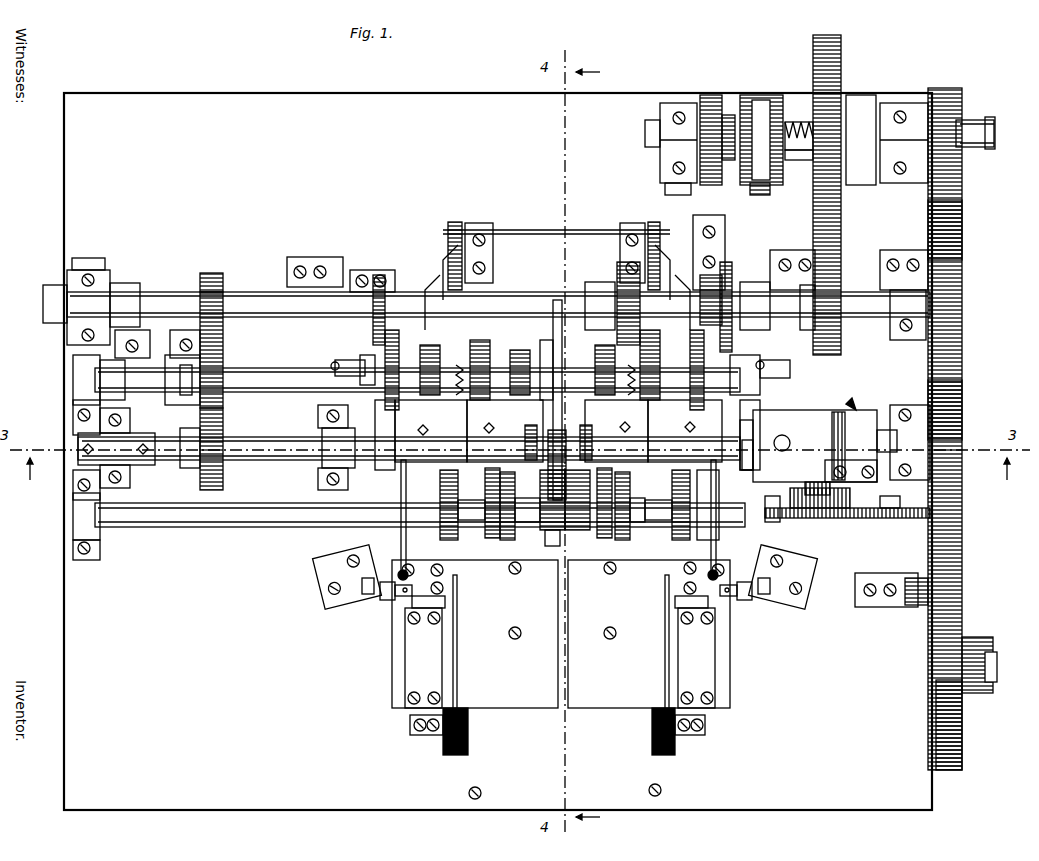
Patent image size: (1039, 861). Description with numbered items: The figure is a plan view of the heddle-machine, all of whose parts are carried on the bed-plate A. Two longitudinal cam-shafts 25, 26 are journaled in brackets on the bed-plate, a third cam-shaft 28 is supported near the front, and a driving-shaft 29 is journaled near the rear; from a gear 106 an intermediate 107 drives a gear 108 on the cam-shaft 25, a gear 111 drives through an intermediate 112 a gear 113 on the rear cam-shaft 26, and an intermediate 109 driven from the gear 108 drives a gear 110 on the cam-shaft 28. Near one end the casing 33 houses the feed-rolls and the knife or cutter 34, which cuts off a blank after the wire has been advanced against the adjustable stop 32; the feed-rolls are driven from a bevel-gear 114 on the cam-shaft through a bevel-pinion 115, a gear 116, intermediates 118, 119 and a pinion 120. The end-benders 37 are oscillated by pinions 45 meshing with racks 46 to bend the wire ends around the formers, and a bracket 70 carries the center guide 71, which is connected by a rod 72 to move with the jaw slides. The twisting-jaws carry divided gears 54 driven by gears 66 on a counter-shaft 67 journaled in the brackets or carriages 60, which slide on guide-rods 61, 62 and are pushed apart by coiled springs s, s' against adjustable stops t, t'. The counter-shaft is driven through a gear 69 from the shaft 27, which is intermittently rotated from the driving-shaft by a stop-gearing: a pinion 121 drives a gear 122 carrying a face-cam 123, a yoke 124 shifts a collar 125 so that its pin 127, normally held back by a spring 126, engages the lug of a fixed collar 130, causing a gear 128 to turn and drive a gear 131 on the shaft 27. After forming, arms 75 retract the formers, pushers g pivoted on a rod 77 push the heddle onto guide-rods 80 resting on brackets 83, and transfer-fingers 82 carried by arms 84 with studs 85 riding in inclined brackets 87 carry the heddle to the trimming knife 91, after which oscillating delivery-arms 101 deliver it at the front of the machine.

The bed-plate A is at (498, 451).
The cam-shaft 25 is at (256, 440).
The rear cam-shaft 26 is at (265, 322).
The shaft 27 is at (158, 300).
The third cam-shaft 28 is at (998, 692).
The driving-shaft 29 is at (972, 130).
The adjustable stop 32 is at (330, 450).
The frame or casing 33 is at (808, 446).
The knife or cutter 34 is at (745, 462).
The end-benders 37 is at (405, 432).
The pinions 45 is at (388, 355).
The racks 46 is at (333, 364).
The divided gear or pinion 54 is at (497, 462).
The brackets or carriages 60 is at (558, 431).
The guide-rod 61 is at (268, 520).
The guide-rod 62 is at (406, 380).
The gears 66 is at (492, 368).
The counter-shaft 67 is at (550, 368).
The gear 69 is at (618, 272).
The bracket 70 is at (555, 546).
The center guide 71 is at (570, 540).
The rod 72 is at (590, 440).
The arms 75 is at (380, 278).
The rod 77 is at (513, 230).
The guide-rods 80 is at (402, 470).
The transfer-fingers 82 is at (398, 597).
The brackets 83 is at (402, 570).
The arms 84 is at (390, 598).
The studs 85 is at (362, 585).
The inclined brackets 87 is at (320, 593).
The knife or blade 91 is at (560, 652).
The oscillating delivery-arms 101 is at (456, 692).
The gear 106 is at (940, 100).
The intermediate 107 is at (952, 232).
The gear 108 is at (945, 405).
The intermediate 109 is at (938, 612).
The gear 110 is at (945, 702).
The gear 111 is at (212, 462).
The intermediate 112 is at (214, 392).
The gear 113 is at (222, 278).
The bevel-gear 114 is at (849, 404).
The bevel-pinion 115 is at (812, 482).
The gear 116 is at (810, 522).
The intermediate 118 is at (890, 516).
The intermediate 119 is at (878, 525).
The pinion 120 is at (772, 520).
The pinion 121 is at (660, 150).
The gear 122 is at (712, 100).
The face-cam 123 is at (730, 162).
The yoke 124 is at (758, 186).
The collar 125 is at (773, 110).
The spring 126 is at (812, 130).
The pin 127 is at (798, 163).
The gear 128 is at (838, 48).
The collar 130 is at (861, 140).
The gear 131 is at (820, 250).
The pushers g is at (552, 380).
The coiled spring s is at (524, 539).
The coiled spring s' is at (527, 432).
The adjustable stop t is at (470, 527).
The adjustable stop t' is at (652, 530).